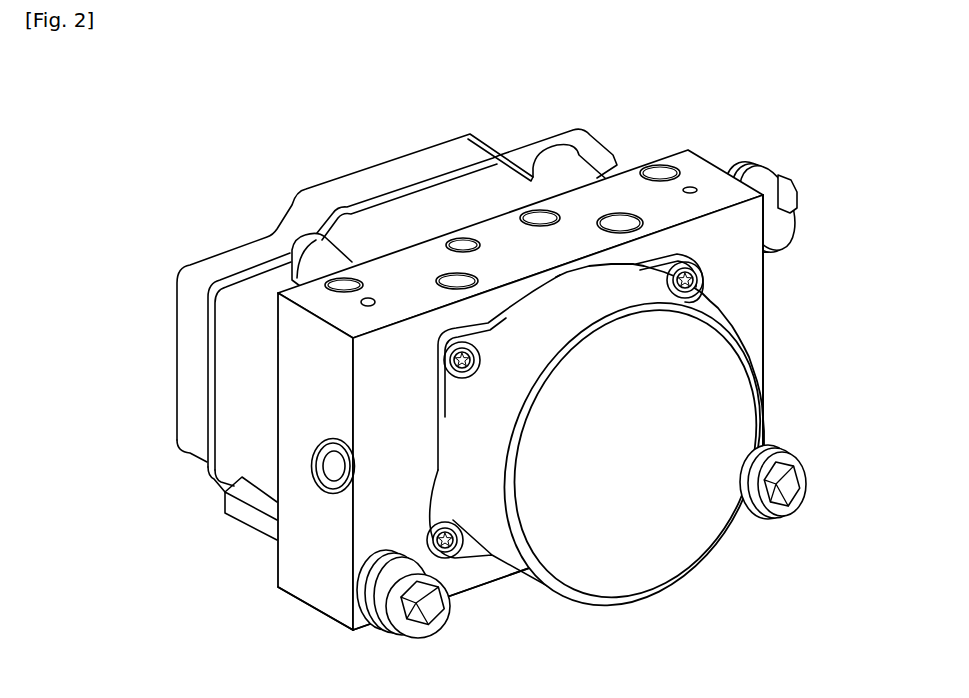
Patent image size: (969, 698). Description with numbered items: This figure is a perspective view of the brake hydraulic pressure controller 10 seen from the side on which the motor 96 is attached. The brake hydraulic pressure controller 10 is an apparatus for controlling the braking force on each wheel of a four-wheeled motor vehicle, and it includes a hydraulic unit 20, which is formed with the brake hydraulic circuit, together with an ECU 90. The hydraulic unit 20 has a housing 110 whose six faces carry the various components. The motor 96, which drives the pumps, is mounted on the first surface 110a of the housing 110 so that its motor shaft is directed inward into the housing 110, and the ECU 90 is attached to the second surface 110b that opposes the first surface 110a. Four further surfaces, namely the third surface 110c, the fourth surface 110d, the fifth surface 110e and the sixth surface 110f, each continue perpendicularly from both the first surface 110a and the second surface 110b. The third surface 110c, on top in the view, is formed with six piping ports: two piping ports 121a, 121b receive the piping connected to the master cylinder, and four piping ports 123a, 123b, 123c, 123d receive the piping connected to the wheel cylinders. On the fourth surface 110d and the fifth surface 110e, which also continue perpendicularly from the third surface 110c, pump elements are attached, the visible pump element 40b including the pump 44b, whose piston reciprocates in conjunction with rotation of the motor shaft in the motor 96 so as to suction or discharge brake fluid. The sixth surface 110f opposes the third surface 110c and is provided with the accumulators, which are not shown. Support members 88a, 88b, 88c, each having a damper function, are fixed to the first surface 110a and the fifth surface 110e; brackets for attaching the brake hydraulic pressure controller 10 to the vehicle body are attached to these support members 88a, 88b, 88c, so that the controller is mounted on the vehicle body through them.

The brake hydraulic pressure controller 10 is at (673, 110).
The hydraulic unit 20 is at (718, 150).
The ECU 90 is at (607, 125).
The motor 96 is at (693, 553).
The housing 110 is at (482, 388).
The first surface 110a is at (750, 322).
The second surface 110b is at (272, 310).
The third surface 110c is at (413, 268).
The fourth surface 110d is at (298, 557).
The fifth surface 110e is at (766, 353).
The sixth surface 110f is at (468, 598).
The piping port 121a is at (620, 223).
The piping port 121b is at (455, 281).
The piping port 123a is at (660, 172).
The piping port 123b is at (540, 218).
The piping port 123c is at (343, 283).
The piping port 123d is at (463, 245).
The support member 88a is at (376, 618).
The support member 88b is at (780, 440).
The support member 88c is at (783, 240).
The pump element 40b is at (221, 490).
The pump 44b is at (328, 468).